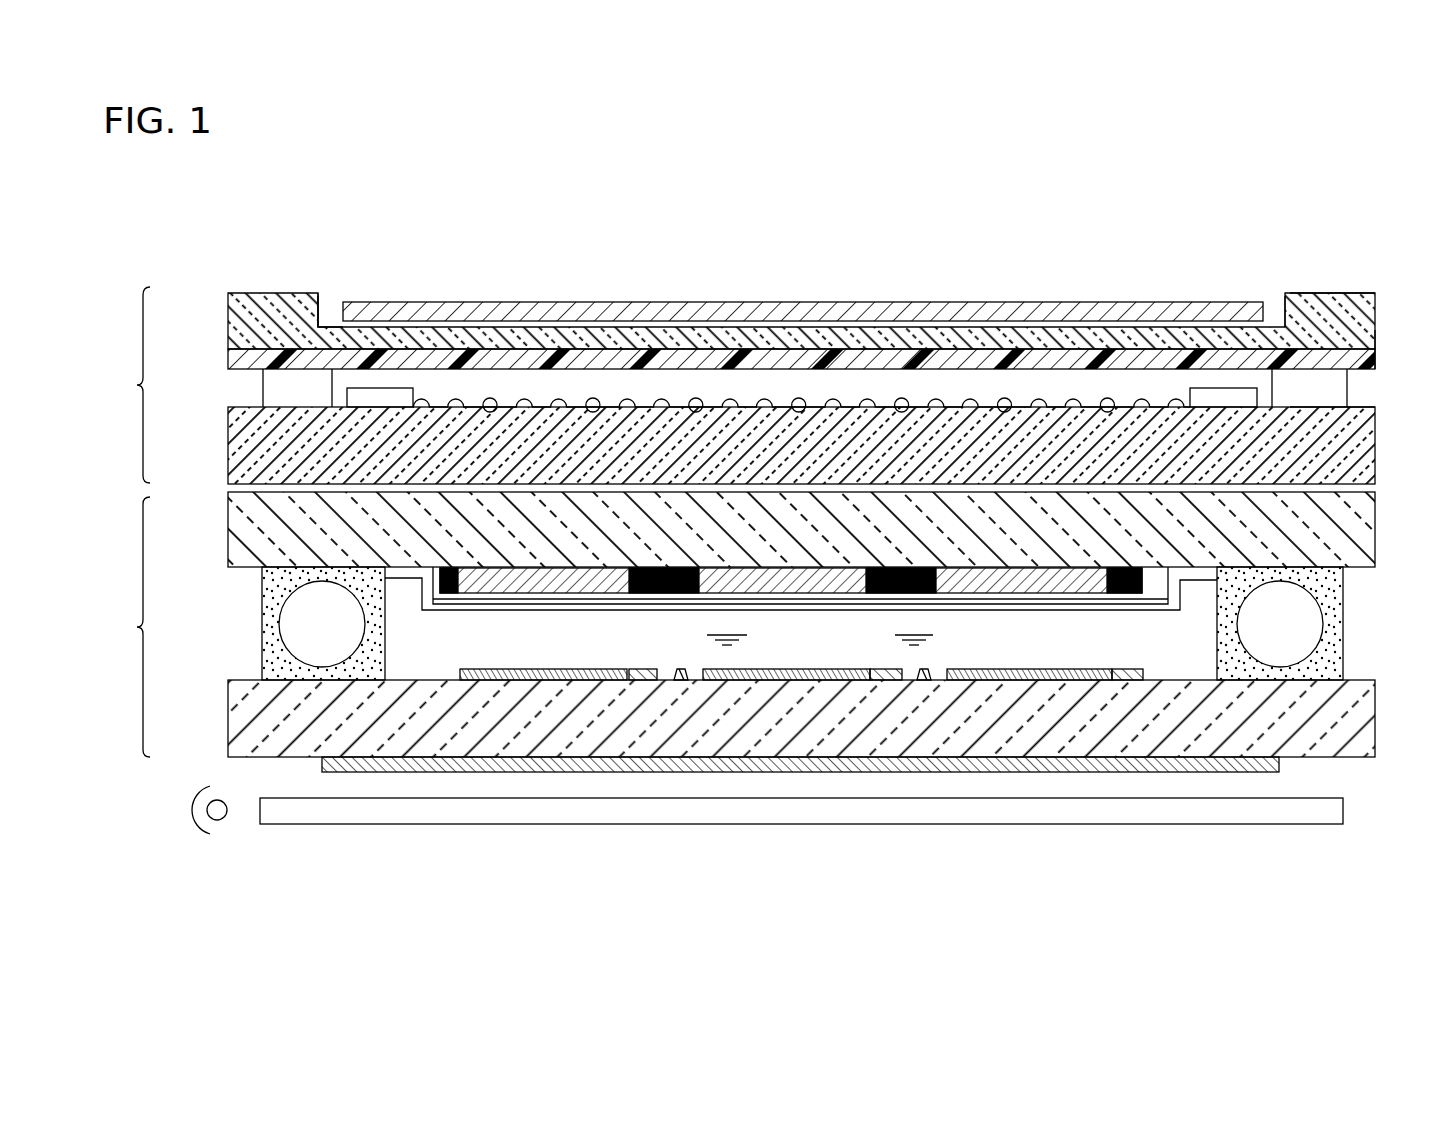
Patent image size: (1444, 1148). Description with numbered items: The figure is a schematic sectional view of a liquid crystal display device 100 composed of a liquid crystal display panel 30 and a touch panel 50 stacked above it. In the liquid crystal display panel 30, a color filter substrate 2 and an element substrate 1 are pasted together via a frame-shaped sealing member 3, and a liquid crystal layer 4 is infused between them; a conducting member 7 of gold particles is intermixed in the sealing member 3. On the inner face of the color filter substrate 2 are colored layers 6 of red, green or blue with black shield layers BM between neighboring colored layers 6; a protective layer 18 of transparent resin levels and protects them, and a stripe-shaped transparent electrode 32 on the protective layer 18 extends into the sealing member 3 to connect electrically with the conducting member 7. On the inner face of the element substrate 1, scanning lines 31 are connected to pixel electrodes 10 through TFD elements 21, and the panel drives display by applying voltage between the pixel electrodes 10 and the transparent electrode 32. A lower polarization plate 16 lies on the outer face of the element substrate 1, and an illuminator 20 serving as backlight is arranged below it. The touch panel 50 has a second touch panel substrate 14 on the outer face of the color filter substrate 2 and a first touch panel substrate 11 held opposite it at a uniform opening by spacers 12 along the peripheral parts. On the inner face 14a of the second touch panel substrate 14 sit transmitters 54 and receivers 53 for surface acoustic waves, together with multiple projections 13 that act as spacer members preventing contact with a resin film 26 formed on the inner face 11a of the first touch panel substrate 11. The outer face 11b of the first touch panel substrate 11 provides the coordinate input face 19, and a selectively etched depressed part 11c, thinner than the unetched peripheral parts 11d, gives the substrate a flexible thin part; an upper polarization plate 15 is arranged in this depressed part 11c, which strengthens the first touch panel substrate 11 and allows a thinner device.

The liquid crystal display device 100 is at (697, 250).
The touch panel 50 is at (771, 345).
The liquid crystal display panel 30 is at (765, 624).
The first touch panel substrate 11 is at (228, 318).
The inner face of first touch panel substrate 11a is at (1373, 360).
The outer face of first touch panel substrate 11b is at (331, 322).
The depressed part 11c is at (1272, 312).
The peripheral parts 11d is at (1330, 291).
The coordinate input face 19 is at (322, 280).
The upper polarization plate 15 is at (1027, 302).
The resin film 26 is at (228, 358).
The spacers 12 is at (265, 391).
The transmitters 54 is at (384, 393).
The receivers 53 is at (1224, 388).
The projections 13 is at (797, 400).
The second touch panel substrate 14 is at (228, 440).
The inner face of second touch panel substrate 14a is at (1366, 394).
The color filter substrate 2 is at (228, 525).
The sealing member 3 is at (1344, 589).
The conducting member 7 is at (1305, 621).
The colored layers 6 is at (778, 596).
The black shield layers BM is at (913, 596).
The transparent electrode 32 is at (1133, 605).
The protective layer 18 is at (1157, 594).
The liquid crystal layer 4 is at (851, 653).
The pixel electrodes 10 is at (576, 668).
The TFD elements 21 is at (637, 668).
The scanning lines 31 is at (679, 668).
The element substrate 1 is at (228, 716).
The lower polarization plate 16 is at (1283, 765).
The illuminator 20 is at (927, 826).